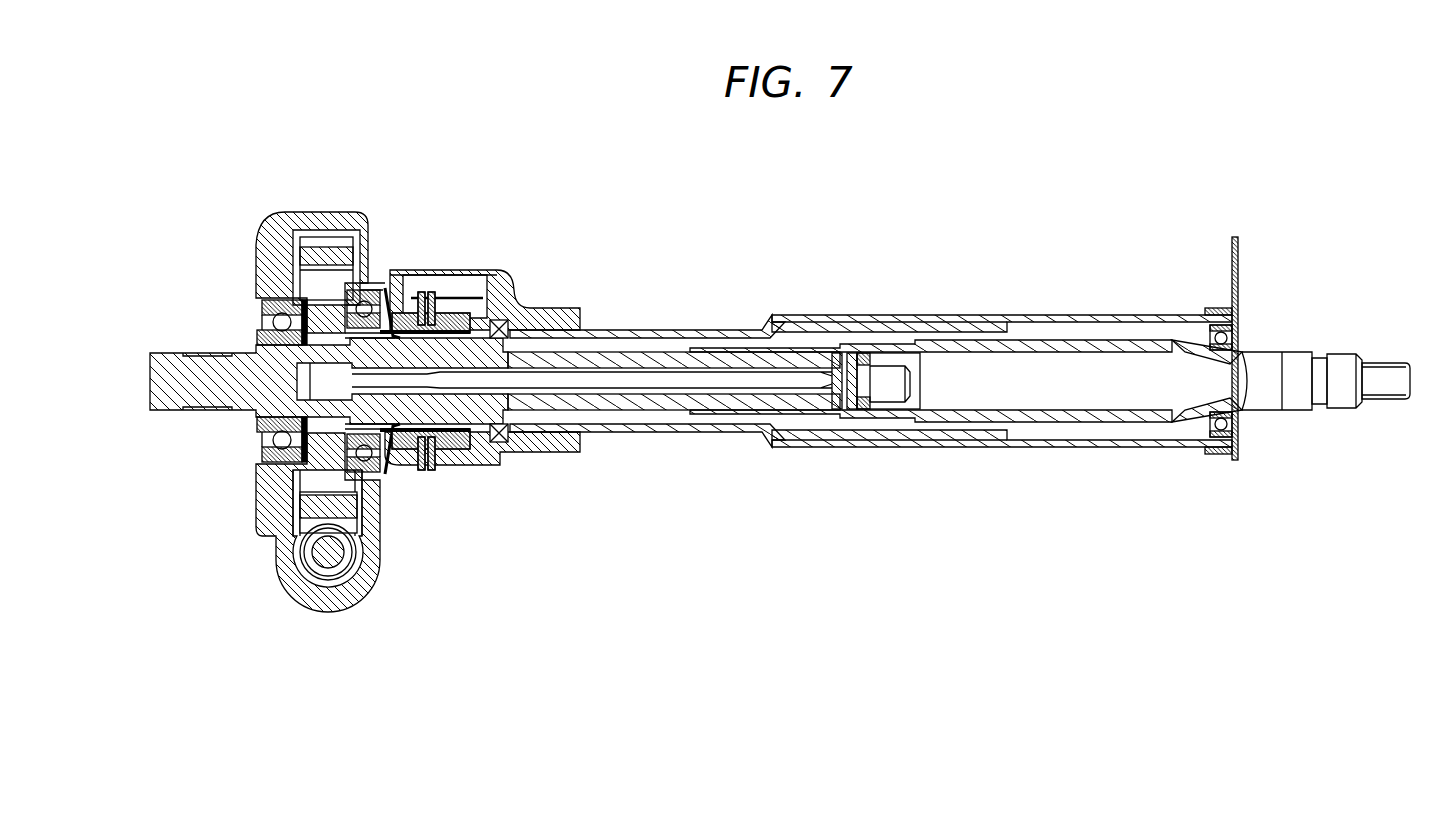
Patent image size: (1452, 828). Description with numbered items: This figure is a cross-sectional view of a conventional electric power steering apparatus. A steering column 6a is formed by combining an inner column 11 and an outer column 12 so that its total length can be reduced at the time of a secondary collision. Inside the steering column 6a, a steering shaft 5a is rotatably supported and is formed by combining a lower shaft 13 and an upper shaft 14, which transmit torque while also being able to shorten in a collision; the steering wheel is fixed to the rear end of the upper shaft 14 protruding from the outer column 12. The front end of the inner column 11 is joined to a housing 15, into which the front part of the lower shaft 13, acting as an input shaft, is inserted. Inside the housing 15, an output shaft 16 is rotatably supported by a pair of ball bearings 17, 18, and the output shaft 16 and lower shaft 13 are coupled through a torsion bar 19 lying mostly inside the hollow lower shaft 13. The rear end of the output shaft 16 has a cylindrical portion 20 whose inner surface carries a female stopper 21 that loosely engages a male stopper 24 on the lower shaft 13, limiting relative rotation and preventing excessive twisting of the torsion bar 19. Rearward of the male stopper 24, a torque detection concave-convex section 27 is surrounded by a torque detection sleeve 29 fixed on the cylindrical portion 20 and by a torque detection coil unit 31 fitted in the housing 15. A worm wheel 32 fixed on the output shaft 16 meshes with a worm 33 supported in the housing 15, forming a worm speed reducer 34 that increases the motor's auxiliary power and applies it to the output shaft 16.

The steering shaft 5a is at (737, 352).
The steering column 6a is at (1060, 312).
The inner column 11 is at (677, 430).
The outer column 12 is at (1118, 450).
The lower shaft 13 is at (648, 356).
The upper shaft 14 is at (1157, 346).
The housing 15 is at (483, 458).
The output shaft 16 is at (225, 368).
The ball bearing 17 is at (265, 466).
The ball bearing 18 is at (368, 470).
The torsion bar 19 is at (540, 383).
The cylindrical portion 20 is at (365, 300).
The female stopper 21 is at (262, 436).
The male stopper 24 is at (396, 460).
The torque detection concave-convex section 27 is at (456, 333).
The torque detection sleeve 29 is at (428, 296).
The torque detection coil unit 31 is at (440, 446).
The worm wheel 32 is at (312, 480).
The worm 33 is at (320, 585).
The worm speed reducer 34 is at (350, 583).